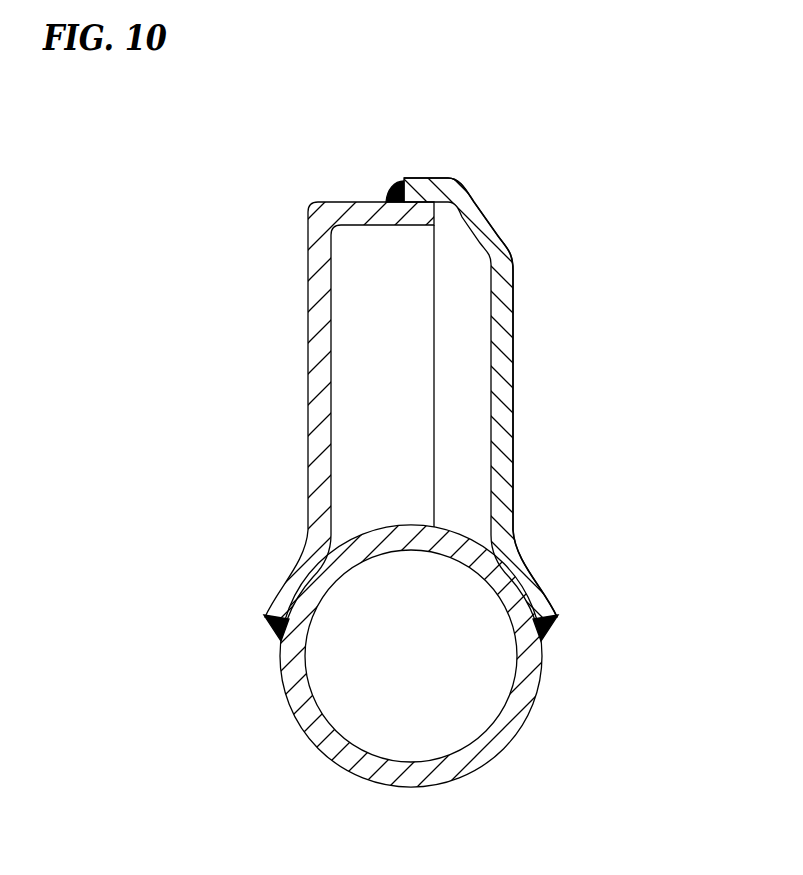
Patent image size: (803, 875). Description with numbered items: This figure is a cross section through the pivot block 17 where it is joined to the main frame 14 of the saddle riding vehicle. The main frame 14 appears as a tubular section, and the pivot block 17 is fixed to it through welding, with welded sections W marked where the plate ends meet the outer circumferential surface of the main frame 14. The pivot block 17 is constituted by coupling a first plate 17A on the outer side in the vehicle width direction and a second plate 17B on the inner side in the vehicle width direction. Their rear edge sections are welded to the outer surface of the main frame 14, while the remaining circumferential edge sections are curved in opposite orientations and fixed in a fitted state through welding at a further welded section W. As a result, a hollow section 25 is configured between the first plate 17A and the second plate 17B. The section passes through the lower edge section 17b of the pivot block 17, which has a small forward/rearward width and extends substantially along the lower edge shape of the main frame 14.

The main frame 14 is at (510, 754).
The pivot block 17 is at (411, 362).
The first plate 17A is at (528, 399).
The second plate 17B is at (308, 358).
The lower edge section 17b is at (514, 263).
The hollow section 25 is at (465, 267).
The welded section W is at (392, 189).